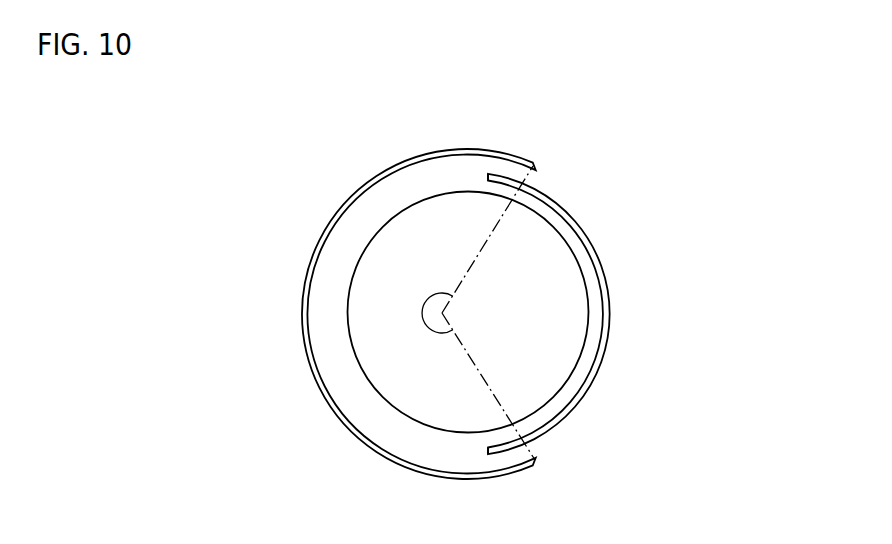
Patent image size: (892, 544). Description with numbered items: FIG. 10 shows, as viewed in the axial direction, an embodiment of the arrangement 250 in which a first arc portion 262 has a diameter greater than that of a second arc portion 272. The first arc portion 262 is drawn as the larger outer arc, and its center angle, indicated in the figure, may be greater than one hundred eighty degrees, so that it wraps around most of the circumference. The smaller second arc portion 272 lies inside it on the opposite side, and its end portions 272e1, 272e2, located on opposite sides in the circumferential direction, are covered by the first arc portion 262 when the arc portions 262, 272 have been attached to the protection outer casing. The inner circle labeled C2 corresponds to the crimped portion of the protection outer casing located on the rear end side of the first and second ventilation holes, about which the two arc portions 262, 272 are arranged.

The lens unit / assembly 250 is at (778, 235).
The first arc portion 262 is at (303, 293).
The second arc portion 272 is at (583, 226).
The end portion 272e1 is at (488, 451).
The end portion 272e2 is at (487, 175).
The crimped portion C2 is at (553, 403).